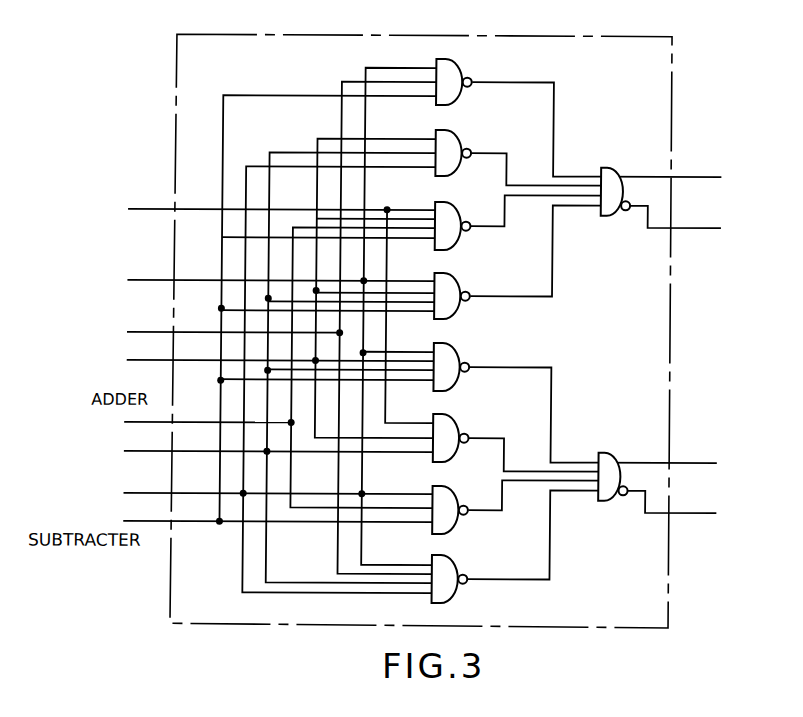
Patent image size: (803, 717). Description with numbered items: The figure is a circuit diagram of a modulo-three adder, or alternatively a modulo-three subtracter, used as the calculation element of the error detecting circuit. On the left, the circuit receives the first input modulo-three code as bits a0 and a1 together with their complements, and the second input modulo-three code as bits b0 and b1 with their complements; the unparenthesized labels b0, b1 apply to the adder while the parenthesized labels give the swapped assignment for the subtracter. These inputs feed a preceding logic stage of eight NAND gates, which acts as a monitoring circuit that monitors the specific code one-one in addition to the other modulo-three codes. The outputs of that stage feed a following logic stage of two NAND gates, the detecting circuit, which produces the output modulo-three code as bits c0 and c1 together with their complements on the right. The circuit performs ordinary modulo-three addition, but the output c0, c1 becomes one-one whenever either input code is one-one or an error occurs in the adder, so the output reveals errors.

The higher significant bit of first input modulo-3 code a0 is at (117, 265).
The lower significant bit of first input modulo-3 code a1 is at (117, 347).
The higher significant bit of second input modulo-3 code b0 is at (114, 439).
The lower significant bit of second input modulo-3 code b1 is at (114, 509).
The higher significant bit of output modulo-3 code c0 is at (751, 217).
The lower significant bit of output modulo-3 code c1 is at (751, 498).